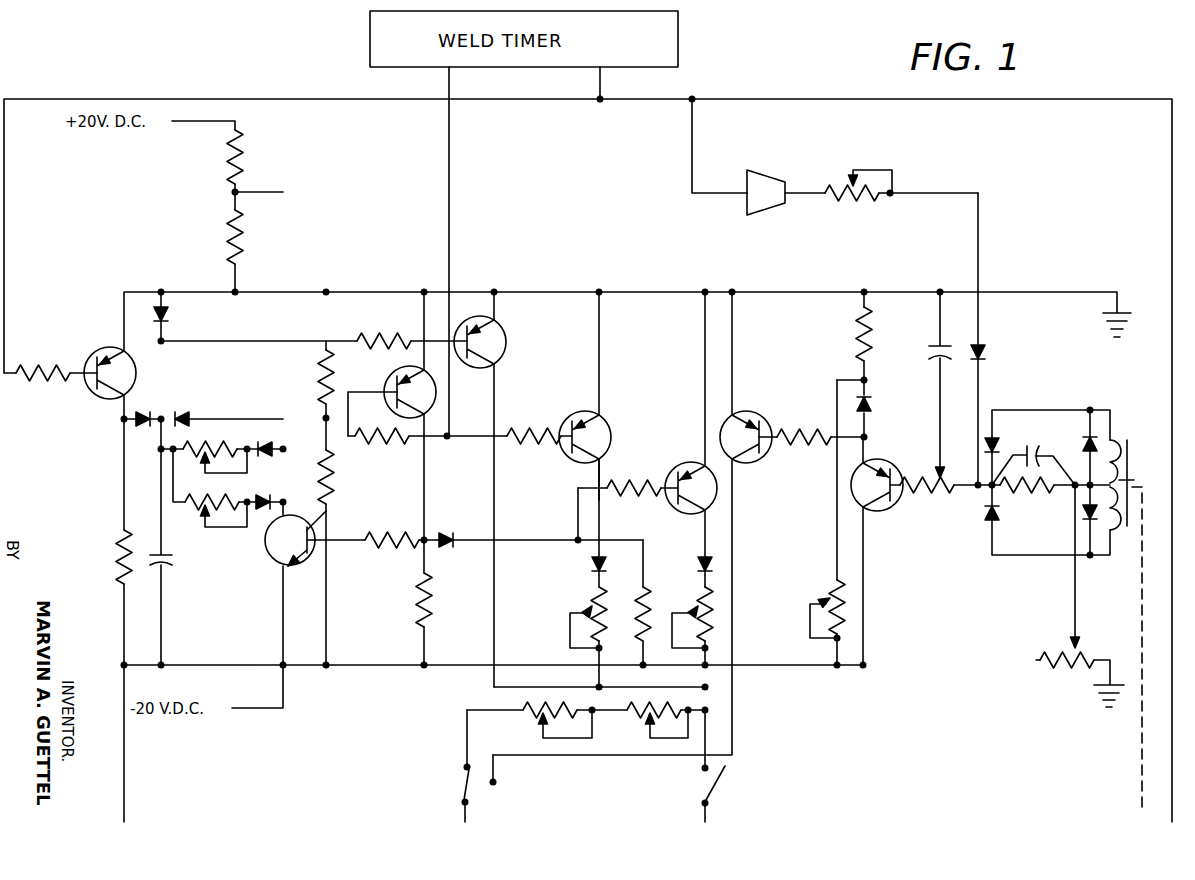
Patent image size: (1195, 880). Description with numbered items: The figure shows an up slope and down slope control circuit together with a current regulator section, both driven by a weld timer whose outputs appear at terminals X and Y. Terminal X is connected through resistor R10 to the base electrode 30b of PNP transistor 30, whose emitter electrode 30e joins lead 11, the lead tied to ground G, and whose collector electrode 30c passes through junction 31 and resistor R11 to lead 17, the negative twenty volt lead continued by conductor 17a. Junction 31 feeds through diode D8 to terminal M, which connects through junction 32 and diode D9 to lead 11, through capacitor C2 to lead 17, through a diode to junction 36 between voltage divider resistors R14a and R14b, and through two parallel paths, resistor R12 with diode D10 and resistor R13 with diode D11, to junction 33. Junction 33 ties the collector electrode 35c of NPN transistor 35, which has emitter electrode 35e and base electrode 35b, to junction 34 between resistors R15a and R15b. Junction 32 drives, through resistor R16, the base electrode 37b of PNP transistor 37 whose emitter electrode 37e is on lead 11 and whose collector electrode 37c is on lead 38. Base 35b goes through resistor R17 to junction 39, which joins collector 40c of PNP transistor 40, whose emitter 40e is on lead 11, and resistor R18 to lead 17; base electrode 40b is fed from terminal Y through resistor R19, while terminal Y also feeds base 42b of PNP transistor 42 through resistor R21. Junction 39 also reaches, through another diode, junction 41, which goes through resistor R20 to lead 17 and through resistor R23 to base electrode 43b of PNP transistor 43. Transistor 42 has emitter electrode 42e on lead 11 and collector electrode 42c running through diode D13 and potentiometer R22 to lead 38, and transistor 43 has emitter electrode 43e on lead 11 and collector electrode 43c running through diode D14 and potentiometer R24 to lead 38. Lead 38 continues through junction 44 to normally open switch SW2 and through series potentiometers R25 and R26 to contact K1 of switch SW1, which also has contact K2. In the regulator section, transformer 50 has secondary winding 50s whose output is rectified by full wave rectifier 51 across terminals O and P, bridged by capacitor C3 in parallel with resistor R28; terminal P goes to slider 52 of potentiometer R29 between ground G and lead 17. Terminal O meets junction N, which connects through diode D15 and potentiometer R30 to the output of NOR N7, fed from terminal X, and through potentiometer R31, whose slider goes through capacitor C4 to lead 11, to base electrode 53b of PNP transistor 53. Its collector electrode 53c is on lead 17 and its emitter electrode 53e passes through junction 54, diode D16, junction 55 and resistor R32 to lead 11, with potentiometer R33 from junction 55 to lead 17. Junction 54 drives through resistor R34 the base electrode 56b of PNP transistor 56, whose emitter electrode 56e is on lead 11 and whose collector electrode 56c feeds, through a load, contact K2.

The lead 11 is at (204, 290).
The lead 17 is at (364, 668).
The bus conductor 17a is at (126, 762).
The PNP type transistor 30 is at (90, 352).
The emitter electrode 30e is at (120, 350).
The base electrode 30b is at (94, 384).
The collector electrode 30c is at (118, 402).
The junction 31 is at (120, 424).
The junction 32 is at (166, 342).
The junction 33 is at (285, 503).
The junction 34 is at (241, 192).
The NPN type transistor 35 is at (276, 562).
The base electrode 35b is at (332, 546).
The collector electrode 35c is at (318, 512).
The emitter electrode 35e is at (288, 568).
The junction 36 is at (322, 419).
The PNP type transistor 37 is at (506, 342).
The base electrode 37b is at (466, 329).
The collector electrode 37c is at (496, 363).
The emitter electrode 37e is at (495, 320).
The lead 38 is at (548, 686).
The junction 39 is at (427, 537).
The PNP transistor 40 is at (393, 380).
The base electrode 40b is at (372, 414).
The collector 40c is at (428, 408).
The emitter 40e is at (428, 387).
The junction 41 is at (574, 539).
The PNP type transistor 42 is at (610, 428).
The base 42b is at (566, 445).
The collector electrode 42c is at (604, 452).
The emitter electrode 42e is at (600, 410).
The PNP type transistor 43 is at (718, 492).
The base electrode 43b is at (676, 501).
The collector electrode 43c is at (700, 517).
The emitter electrode 43e is at (700, 474).
The junction 44 is at (708, 712).
The transformer 50 is at (1129, 461).
The secondary winding 50s is at (1138, 638).
The full wave rectifier 51 is at (1018, 410).
The slider 52 is at (1055, 652).
The PNP type transistor 53 is at (890, 480).
The base electrode 53b is at (889, 510).
The collector electrode 53c is at (868, 514).
The emitter electrode 53e is at (866, 466).
The junction 54 is at (866, 437).
The junction 55 is at (867, 381).
The PNP type transistor 56 is at (755, 420).
The base electrode 56b is at (761, 444).
The collector electrode 56c is at (740, 466).
The emitter electrode 56e is at (744, 412).
The resistor R10 is at (58, 368).
The resistor R11 is at (118, 556).
The resistor R12 is at (240, 444).
The resistor R13 is at (188, 508).
The resistor R14a is at (322, 372).
The resistor R14b is at (329, 486).
The voltage dividing resistor R15a is at (232, 160).
The voltage dividing resistor R15b is at (230, 236).
The resistor R16 is at (400, 334).
The resistor R17 is at (368, 540).
The resistor R18 is at (427, 606).
The resistor R19 is at (400, 443).
The resistor R20 is at (648, 602).
The resistor R21 is at (556, 430).
The potentiometer resistor R22 is at (592, 602).
The resistor R23 is at (652, 488).
The potentiometer resistor R24 is at (714, 630).
The potentiometer resistor R25 is at (638, 716).
The potentiometer resistor R26 is at (535, 715).
The resistor R28 is at (1047, 496).
The potentiometer resistor R29 is at (1074, 679).
The potentiometer resistor R30 is at (866, 200).
The potentiometer resistor R31 is at (940, 494).
The resistor R32 is at (868, 336).
The potentiometer resistor R33 is at (830, 585).
The resistor R34 is at (828, 433).
The diode D8 is at (144, 408).
The diode D9 is at (169, 316).
The diode D10 is at (272, 447).
The diode D11 is at (268, 510).
The diode D13 is at (592, 566).
The diode D14 is at (697, 560).
The diode D15 is at (986, 354).
The diode D16 is at (872, 405).
The capacitor C2 is at (165, 566).
The capacitor C3 is at (1050, 440).
The capacitor C4 is at (943, 364).
The NOR N7 is at (766, 192).
The contact K1 is at (462, 768).
The contact K2 is at (497, 785).
The switch SW1 is at (463, 793).
The normally open switch SW2 is at (716, 782).
The terminal X is at (601, 103).
The terminal Y is at (450, 440).
The terminal M is at (166, 415).
The junction N is at (964, 504).
The terminal O is at (983, 497).
The terminal P is at (1070, 490).
The ground G is at (1101, 706).